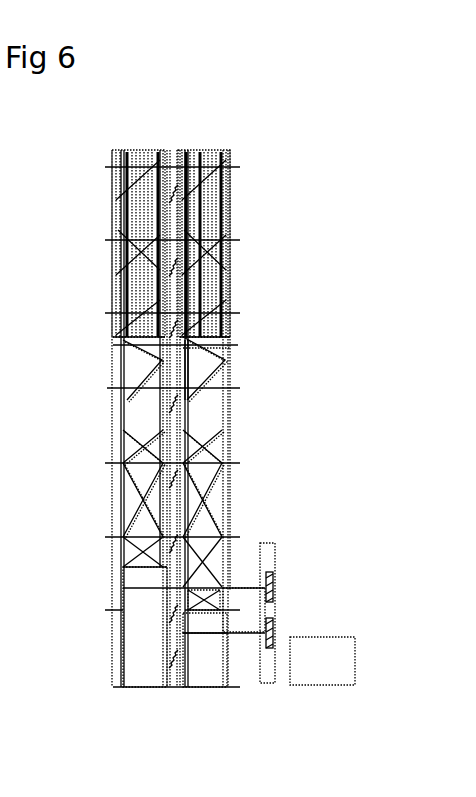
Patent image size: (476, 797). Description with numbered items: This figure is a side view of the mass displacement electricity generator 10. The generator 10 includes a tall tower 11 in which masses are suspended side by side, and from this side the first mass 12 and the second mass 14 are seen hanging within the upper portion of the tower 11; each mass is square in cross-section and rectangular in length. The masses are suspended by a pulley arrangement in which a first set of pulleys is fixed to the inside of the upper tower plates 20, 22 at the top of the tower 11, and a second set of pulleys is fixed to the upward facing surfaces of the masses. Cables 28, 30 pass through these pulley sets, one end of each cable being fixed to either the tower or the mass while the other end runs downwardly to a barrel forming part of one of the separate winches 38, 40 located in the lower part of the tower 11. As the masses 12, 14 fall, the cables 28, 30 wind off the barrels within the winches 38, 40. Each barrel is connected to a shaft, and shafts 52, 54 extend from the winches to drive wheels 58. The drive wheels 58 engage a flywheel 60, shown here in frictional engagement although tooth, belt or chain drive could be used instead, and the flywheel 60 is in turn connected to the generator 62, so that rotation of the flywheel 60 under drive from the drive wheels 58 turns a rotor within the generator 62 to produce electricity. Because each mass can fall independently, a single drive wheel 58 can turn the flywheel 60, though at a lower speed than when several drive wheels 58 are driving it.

The electricity generator 10 is at (228, 415).
The tower 11 is at (228, 348).
The first mass 12 is at (140, 405).
The second mass 14 is at (220, 407).
The upper tower plate 20 is at (137, 152).
The upper tower plate 22 is at (207, 148).
The cable 28 is at (128, 450).
The cable 30 is at (190, 449).
The winch 38 is at (140, 625).
The winch 40 is at (210, 658).
The shaft 52 is at (242, 590).
The shaft 54 is at (243, 637).
The drive wheel 58 is at (275, 585).
The flywheel 60 is at (273, 557).
The generator 62 is at (343, 667).